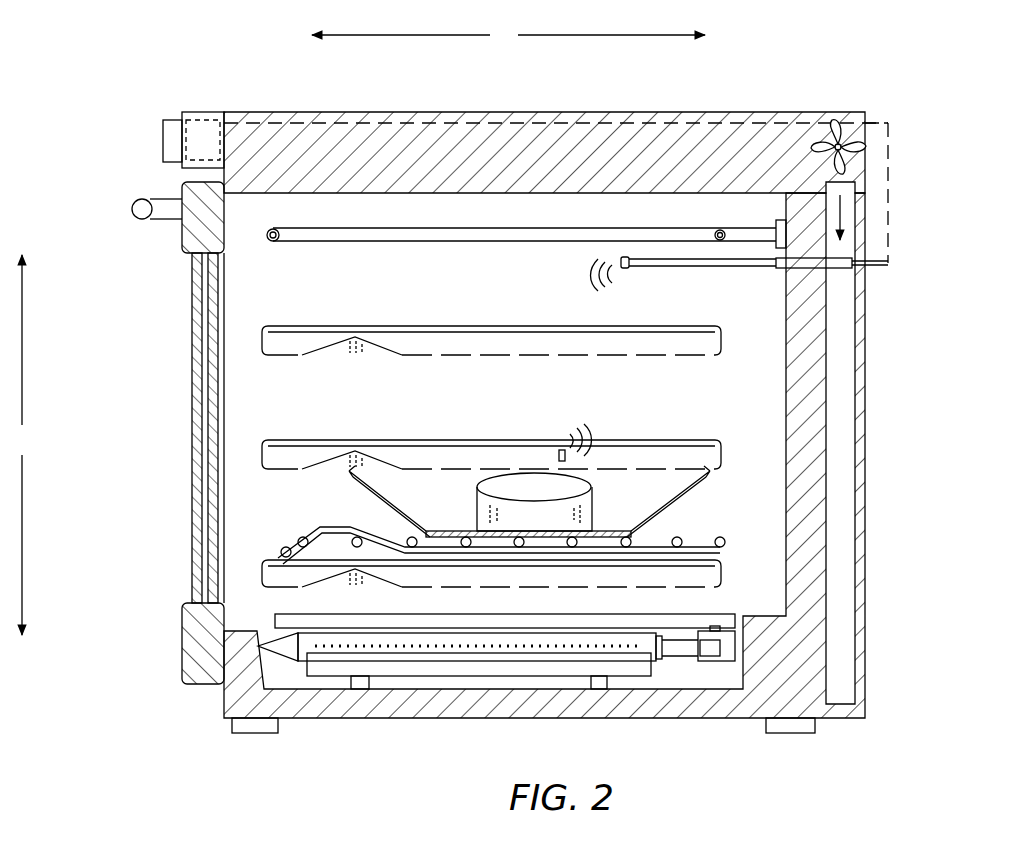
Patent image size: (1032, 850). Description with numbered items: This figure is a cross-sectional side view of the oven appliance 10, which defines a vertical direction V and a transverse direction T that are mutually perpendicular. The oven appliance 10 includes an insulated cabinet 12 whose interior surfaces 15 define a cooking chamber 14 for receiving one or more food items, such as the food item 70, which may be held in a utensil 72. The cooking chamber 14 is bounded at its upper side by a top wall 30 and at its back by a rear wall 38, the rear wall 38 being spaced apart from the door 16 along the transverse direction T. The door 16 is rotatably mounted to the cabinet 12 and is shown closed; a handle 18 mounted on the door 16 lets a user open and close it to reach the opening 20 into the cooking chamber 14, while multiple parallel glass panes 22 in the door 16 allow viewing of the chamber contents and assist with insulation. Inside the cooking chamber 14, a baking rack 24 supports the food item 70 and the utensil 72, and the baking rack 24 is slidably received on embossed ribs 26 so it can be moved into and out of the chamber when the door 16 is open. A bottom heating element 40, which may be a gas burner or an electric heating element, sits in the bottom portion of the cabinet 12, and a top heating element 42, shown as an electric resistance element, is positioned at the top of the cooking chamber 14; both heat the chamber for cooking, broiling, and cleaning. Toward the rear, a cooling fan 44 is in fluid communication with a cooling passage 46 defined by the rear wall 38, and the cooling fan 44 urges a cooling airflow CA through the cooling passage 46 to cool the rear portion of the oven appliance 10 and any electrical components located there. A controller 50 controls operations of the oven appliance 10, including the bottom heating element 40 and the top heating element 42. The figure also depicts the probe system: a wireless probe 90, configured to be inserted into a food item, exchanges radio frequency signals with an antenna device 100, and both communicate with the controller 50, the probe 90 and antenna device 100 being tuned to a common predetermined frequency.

The oven appliance 10 is at (565, 390).
The insulated cabinet 12 is at (284, 128).
The cooking chamber 14 is at (738, 407).
The interior surfaces 15 is at (500, 132).
The top wall 30 is at (511, 200).
The door 16 is at (142, 405).
The handle 18 is at (138, 209).
The opening 20 is at (258, 345).
The glass panes 22 is at (195, 472).
The baking rack 24 is at (330, 545).
The embossed ribs 26 is at (722, 572).
The rear wall 38 is at (785, 333).
The bottom heating element 40 is at (677, 662).
The top heating element 42 is at (612, 220).
The cooling fan 44 is at (862, 141).
The cooling passage 46 is at (840, 310).
The controller 50 is at (196, 118).
The food item 70 is at (493, 482).
The utensil 72 is at (357, 478).
The wireless probe 90 is at (558, 453).
The antenna device 100 is at (686, 270).
The cooling airflow CA is at (846, 218).
The transverse direction T is at (508, 36).
The vertical direction V is at (21, 445).